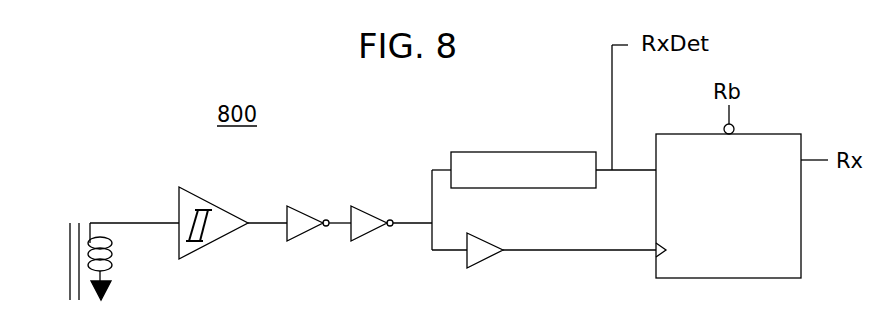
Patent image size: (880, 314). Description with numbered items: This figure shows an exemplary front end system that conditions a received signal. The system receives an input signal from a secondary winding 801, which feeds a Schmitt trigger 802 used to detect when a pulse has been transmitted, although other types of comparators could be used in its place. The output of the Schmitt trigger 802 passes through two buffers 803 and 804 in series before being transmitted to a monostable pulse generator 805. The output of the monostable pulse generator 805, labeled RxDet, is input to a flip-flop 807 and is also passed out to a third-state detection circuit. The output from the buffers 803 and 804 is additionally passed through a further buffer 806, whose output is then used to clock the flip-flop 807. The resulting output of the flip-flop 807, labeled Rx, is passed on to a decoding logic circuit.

The secondary winding 801 is at (89, 223).
The Schmitt trigger 802 is at (207, 201).
The buffer 803 is at (297, 208).
The buffer 804 is at (355, 241).
The monostable pulse generator 805 is at (494, 152).
The buffer 806 is at (480, 237).
The flip-flop 807 is at (752, 134).